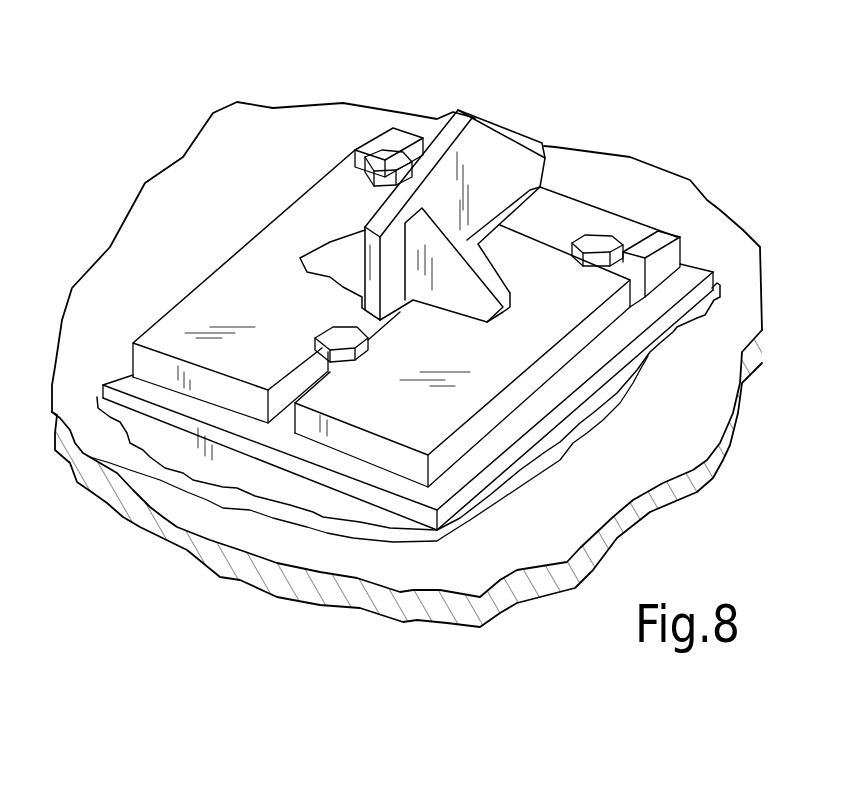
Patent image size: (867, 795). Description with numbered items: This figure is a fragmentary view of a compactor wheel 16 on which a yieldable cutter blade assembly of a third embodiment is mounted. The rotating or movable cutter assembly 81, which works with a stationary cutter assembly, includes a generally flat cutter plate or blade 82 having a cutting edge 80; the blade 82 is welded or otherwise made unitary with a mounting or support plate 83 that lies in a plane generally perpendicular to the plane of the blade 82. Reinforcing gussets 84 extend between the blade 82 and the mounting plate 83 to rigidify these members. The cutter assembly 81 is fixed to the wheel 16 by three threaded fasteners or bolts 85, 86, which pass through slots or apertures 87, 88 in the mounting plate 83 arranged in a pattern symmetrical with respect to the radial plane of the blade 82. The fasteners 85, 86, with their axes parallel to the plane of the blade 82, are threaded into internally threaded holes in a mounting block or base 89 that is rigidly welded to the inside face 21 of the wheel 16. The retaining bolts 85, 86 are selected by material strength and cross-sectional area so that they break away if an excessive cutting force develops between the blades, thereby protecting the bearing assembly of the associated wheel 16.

The wheel 16 is at (635, 540).
The inside face 21 is at (733, 315).
The cutting edge 80 is at (432, 190).
The rotating cutter assembly 81 is at (432, 200).
The cutter plate or blade 82 is at (495, 165).
The mounting plate 83 is at (558, 212).
The reinforcing gussets 84 is at (330, 265).
The threaded fastener or bolt 85 is at (316, 338).
The threaded fastener or bolt 86 is at (389, 162).
The slot or aperture 87 is at (292, 387).
The slot or aperture 88 is at (352, 160).
The mounting block or base 89 is at (186, 438).